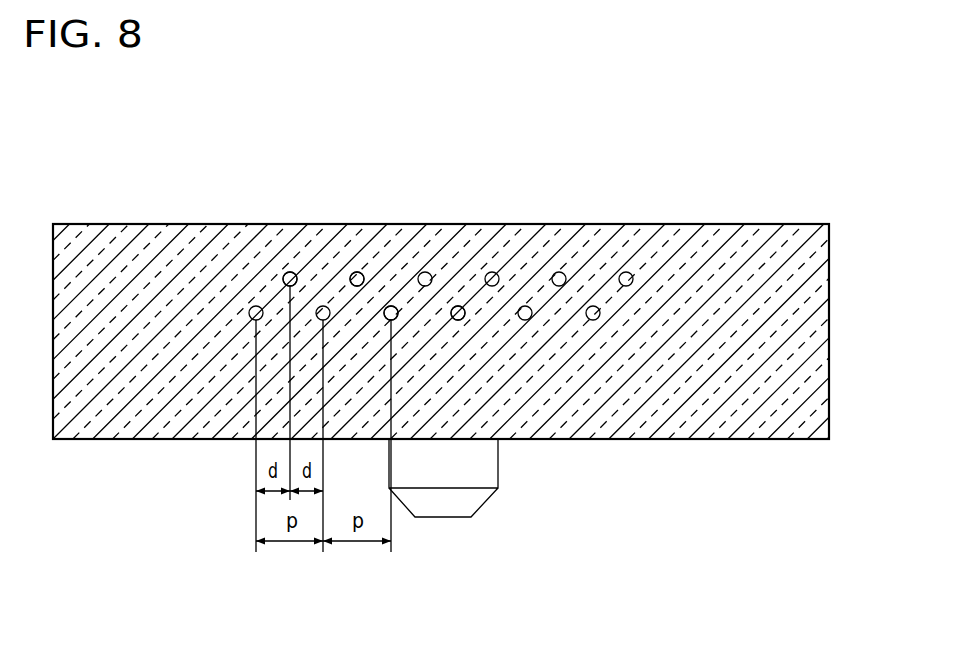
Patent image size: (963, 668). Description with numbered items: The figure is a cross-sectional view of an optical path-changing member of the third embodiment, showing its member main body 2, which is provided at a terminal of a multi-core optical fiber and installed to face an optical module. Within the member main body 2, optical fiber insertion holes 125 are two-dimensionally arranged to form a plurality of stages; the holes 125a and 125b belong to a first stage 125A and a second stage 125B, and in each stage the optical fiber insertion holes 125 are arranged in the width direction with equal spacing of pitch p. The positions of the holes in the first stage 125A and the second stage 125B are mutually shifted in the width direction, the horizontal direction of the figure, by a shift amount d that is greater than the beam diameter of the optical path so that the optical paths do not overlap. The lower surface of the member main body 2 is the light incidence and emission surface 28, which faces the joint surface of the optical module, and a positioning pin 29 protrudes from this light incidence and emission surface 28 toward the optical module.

The member main body 2 is at (750, 208).
The optical fiber insertion holes 125 is at (580, 242).
The optical fiber insertion hole 125a is at (355, 271).
The optical fiber insertion hole 125b is at (456, 306).
The first stage 125A is at (838, 298).
The second stage 125B is at (838, 257).
The light incidence and emission surface 28 is at (583, 439).
The positioning pin 29 is at (443, 517).